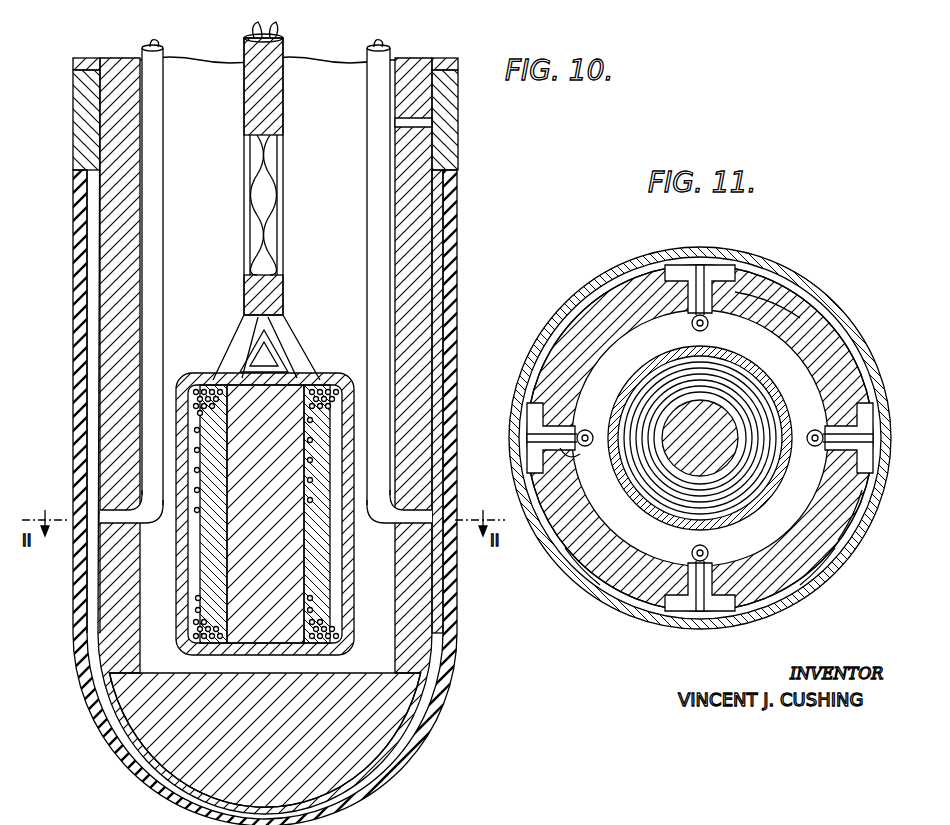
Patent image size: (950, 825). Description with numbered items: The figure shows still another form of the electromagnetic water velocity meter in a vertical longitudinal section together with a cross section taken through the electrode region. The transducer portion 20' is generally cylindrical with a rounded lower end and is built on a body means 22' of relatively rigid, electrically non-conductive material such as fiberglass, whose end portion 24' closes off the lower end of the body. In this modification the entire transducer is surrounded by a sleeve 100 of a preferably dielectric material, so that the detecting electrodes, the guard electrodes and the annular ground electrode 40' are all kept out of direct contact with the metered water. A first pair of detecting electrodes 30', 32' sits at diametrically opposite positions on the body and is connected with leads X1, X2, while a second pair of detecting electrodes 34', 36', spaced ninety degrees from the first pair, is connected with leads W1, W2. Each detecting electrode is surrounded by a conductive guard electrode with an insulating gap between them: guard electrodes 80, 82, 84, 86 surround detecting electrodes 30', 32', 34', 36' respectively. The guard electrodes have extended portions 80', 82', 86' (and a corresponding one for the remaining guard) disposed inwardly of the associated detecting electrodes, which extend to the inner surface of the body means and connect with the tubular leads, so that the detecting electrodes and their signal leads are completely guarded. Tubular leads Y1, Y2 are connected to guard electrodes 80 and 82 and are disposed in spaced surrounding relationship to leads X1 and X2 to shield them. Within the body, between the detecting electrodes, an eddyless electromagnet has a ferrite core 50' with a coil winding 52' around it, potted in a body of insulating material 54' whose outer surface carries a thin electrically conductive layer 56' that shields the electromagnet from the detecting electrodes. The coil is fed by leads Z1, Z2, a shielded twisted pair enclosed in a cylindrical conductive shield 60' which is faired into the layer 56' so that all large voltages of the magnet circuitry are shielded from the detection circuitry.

In FIG. 10, the transducer portion 20' is at (238, 472).
In FIG. 10, the ground electrode 40' is at (244, 84).
In FIG. 10, the sleeve 100 is at (455, 235).
In FIG. 11, the sleeve 100 is at (733, 252).
In FIG. 10, the guard electrode 82 is at (463, 401).
In FIG. 11, the guard electrode 82 is at (707, 438).
In FIG. 10, the guard electrode 80 is at (64, 403).
In FIG. 10, the detecting electrode 30' is at (95, 500).
In FIG. 11, the detecting electrode 30' is at (530, 435).
In FIG. 11, the detecting electrode 32' is at (872, 409).
In FIG. 11, the detecting electrode 34' is at (699, 260).
In FIG. 11, the detecting electrode 36' is at (700, 613).
In FIG. 10, the extended portion 82' is at (420, 538).
In FIG. 11, the extended portion 82' is at (869, 522).
In FIG. 10, the cylindrical shield 60' is at (289, 174).
In FIG. 10, the core 50' is at (221, 514).
In FIG. 11, the core 50' is at (731, 457).
In FIG. 10, the coil winding 52' is at (344, 635).
In FIG. 11, the coil winding 52' is at (697, 427).
In FIG. 10, the body of insulating material 54' is at (246, 514).
In FIG. 11, the body of insulating material 54' is at (700, 445).
In FIG. 10, the layer of electrically conductive material 56' is at (346, 514).
In FIG. 11, the layer of electrically conductive material 56' is at (711, 423).
In FIG. 10, the end portion 24' is at (274, 740).
In FIG. 11, the body means 22' is at (700, 424).
In FIG. 11, the guard electrode 84 is at (780, 283).
In FIG. 11, the guard electrode 86 is at (593, 596).
In FIG. 11, the extended portion 86' is at (798, 598).
In FIG. 11, the extended portion 80' is at (584, 465).
In FIG. 10, the lead X1 is at (153, 44).
In FIG. 11, the lead X1 is at (588, 428).
In FIG. 10, the lead X2 is at (392, 32).
In FIG. 11, the lead X2 is at (812, 428).
In FIG. 10, the tubular lead Y1 is at (166, 58).
In FIG. 10, the tubular lead Y2 is at (368, 56).
In FIG. 10, the lead Z1 is at (256, 38).
In FIG. 10, the lead Z2 is at (278, 38).
In FIG. 11, the lead W1 is at (710, 320).
In FIG. 11, the lead W2 is at (709, 551).